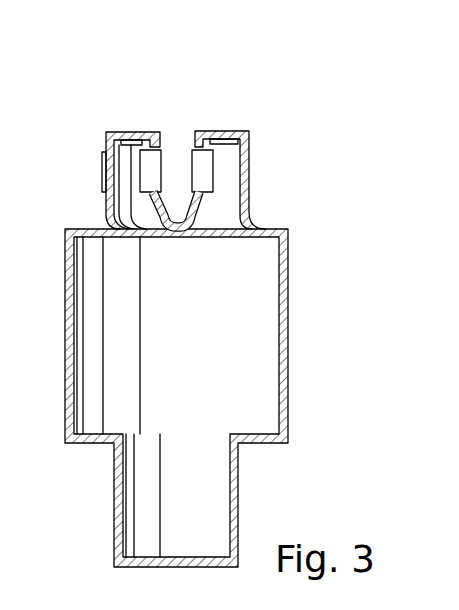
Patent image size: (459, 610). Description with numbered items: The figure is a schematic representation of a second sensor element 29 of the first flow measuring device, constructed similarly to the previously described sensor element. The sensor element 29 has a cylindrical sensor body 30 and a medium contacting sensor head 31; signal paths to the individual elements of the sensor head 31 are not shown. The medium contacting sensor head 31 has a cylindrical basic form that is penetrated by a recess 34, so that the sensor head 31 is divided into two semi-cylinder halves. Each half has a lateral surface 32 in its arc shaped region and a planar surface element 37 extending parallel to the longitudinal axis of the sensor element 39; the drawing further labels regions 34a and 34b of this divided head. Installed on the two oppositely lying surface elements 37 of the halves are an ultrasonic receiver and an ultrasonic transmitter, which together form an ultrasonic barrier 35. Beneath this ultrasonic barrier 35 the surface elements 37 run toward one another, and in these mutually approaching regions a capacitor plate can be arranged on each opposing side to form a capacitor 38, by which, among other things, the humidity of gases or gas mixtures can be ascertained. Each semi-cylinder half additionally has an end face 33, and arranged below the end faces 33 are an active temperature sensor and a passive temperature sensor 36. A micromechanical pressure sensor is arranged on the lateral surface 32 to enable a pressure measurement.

The sensor element 29 is at (205, 296).
The cylindrical sensor body 30 is at (285, 373).
The medium contacting sensor head 31 is at (256, 153).
The lateral surface 32 is at (249, 137).
The end face 33 is at (222, 130).
The recess 34 is at (229, 126).
The first contact layer 34a is at (100, 256).
The second contact layer 34b is at (153, 210).
The ultrasonic barrier 35 is at (203, 164).
The passive temperature sensor 36 is at (132, 132).
The planar surface element 37 is at (164, 148).
The capacitor 38 is at (200, 207).
The sensor element 39 is at (103, 152).